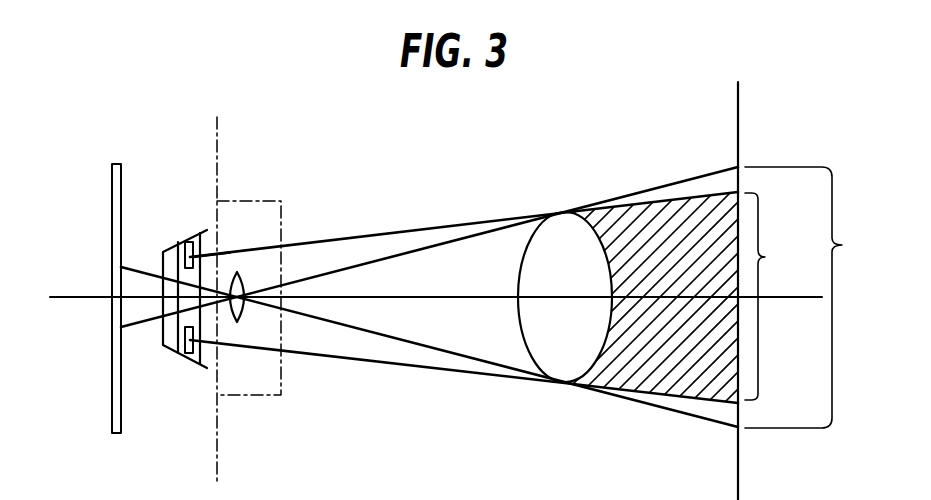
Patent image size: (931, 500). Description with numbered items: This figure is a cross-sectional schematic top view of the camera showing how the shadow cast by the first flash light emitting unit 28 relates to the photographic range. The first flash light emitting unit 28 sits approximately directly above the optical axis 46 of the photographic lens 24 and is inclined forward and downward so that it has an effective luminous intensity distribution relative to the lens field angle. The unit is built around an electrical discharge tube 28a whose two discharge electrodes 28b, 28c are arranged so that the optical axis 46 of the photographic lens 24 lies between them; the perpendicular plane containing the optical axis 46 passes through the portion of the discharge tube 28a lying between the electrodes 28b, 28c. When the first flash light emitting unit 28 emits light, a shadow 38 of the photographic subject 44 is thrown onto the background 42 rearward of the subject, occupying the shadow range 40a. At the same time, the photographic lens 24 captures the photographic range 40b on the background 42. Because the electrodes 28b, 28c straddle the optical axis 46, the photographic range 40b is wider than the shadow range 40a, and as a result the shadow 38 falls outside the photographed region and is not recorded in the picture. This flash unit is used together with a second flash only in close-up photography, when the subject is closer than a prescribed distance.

The optical axis 46 is at (78, 295).
The first flash light emitting unit 28 is at (168, 345).
The electrical discharge tube 28a is at (185, 278).
The discharge electrode 28b is at (217, 368).
The discharge electrode 28c is at (215, 258).
The photographic lens 24 is at (243, 312).
The photographic subject 44 is at (550, 238).
The shadow 38 is at (633, 370).
The background 42 is at (738, 121).
The shadow range 40a is at (786, 296).
The photographic range 40b is at (825, 297).